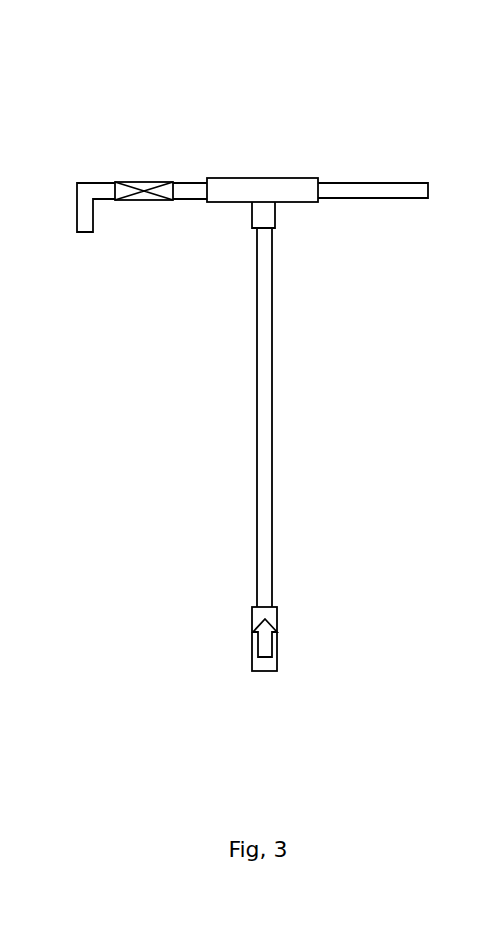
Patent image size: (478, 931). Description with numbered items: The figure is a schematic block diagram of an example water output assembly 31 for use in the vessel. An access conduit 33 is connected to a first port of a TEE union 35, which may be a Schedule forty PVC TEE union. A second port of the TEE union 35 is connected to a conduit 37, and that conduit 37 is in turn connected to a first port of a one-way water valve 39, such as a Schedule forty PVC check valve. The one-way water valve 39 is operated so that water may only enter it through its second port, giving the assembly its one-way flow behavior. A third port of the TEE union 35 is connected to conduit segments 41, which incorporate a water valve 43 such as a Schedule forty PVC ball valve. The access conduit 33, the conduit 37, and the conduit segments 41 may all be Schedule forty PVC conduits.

The water output assembly 31 is at (477, 102).
The access conduit 33 is at (385, 205).
The TEE union 35 is at (297, 217).
The conduit 37 is at (285, 420).
The one-way water valve 39 is at (285, 635).
The conduit segments 41 is at (105, 208).
The water valve 43 is at (143, 172).